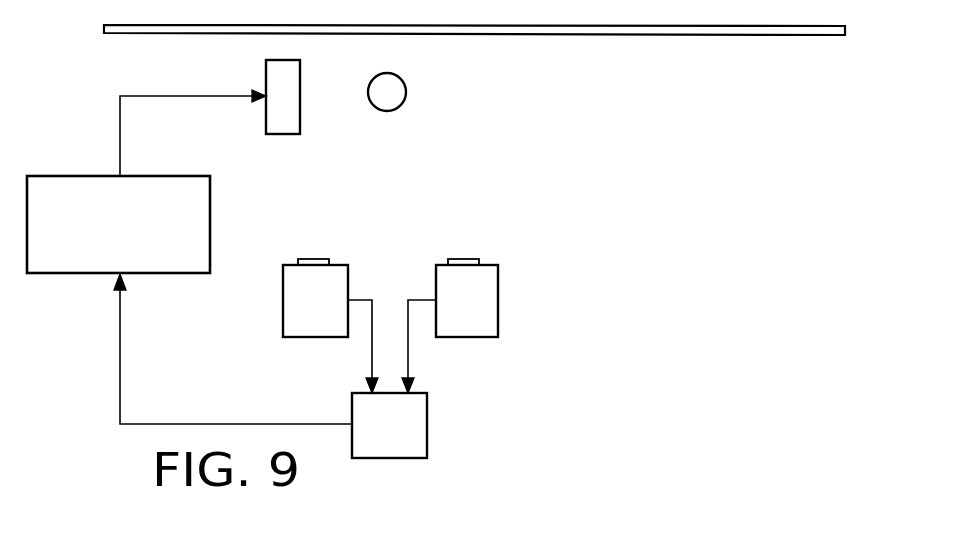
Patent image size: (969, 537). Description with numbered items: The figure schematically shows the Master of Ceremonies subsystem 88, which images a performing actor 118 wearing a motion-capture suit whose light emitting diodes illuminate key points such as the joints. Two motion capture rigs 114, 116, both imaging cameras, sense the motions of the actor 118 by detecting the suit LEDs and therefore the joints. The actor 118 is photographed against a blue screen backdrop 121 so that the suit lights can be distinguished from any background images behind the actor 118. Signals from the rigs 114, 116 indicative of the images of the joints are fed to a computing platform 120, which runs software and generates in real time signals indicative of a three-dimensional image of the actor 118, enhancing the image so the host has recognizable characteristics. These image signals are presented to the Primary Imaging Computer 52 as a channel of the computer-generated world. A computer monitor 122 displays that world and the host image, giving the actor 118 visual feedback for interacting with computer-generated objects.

The Primary Imaging Computer 52 is at (72, 176).
The Master of Ceremonies subsystem 88 is at (468, 150).
The motion capture rig 114 is at (283, 306).
The motion capture rig 116 is at (522, 290).
The actor 118 is at (428, 85).
The computing platform 120 is at (427, 428).
The blue screen backdrop 121 is at (150, 36).
The computer monitor 122 is at (265, 82).